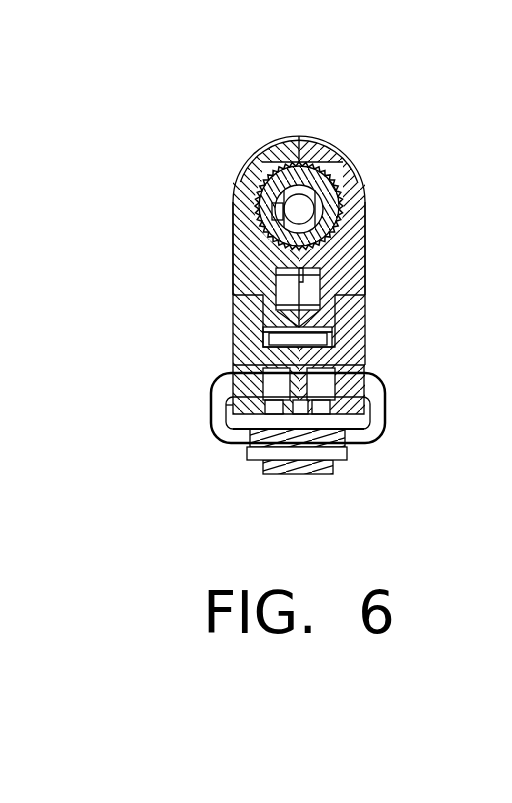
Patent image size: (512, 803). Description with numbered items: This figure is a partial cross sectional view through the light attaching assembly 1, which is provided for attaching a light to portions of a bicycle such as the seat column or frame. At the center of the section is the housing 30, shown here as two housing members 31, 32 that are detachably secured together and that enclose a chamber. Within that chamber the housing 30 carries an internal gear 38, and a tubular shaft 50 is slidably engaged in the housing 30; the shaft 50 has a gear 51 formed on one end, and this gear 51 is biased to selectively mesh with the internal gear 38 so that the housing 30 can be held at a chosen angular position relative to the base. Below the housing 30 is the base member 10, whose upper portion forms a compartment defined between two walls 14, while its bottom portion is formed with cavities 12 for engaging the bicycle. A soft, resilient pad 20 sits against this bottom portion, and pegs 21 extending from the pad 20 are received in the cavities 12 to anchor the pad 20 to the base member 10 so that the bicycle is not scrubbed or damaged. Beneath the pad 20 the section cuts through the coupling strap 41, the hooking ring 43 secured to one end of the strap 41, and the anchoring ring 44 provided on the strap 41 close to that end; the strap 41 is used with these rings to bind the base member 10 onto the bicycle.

The light attaching assembly 1 is at (366, 107).
The base member 10 is at (253, 334).
The cavities 12 is at (268, 372).
The walls 14 is at (358, 327).
The pad 20 is at (358, 421).
The pegs 21 is at (345, 398).
The housing 30 is at (198, 196).
The housing member 31 is at (238, 232).
The housing member 32 is at (357, 243).
The internal gear 38 is at (272, 165).
The coupling strap 41 is at (316, 476).
The hooking ring 43 is at (228, 408).
The anchoring ring 44 is at (260, 455).
The shaft 50 is at (304, 160).
The gear 51 is at (345, 172).